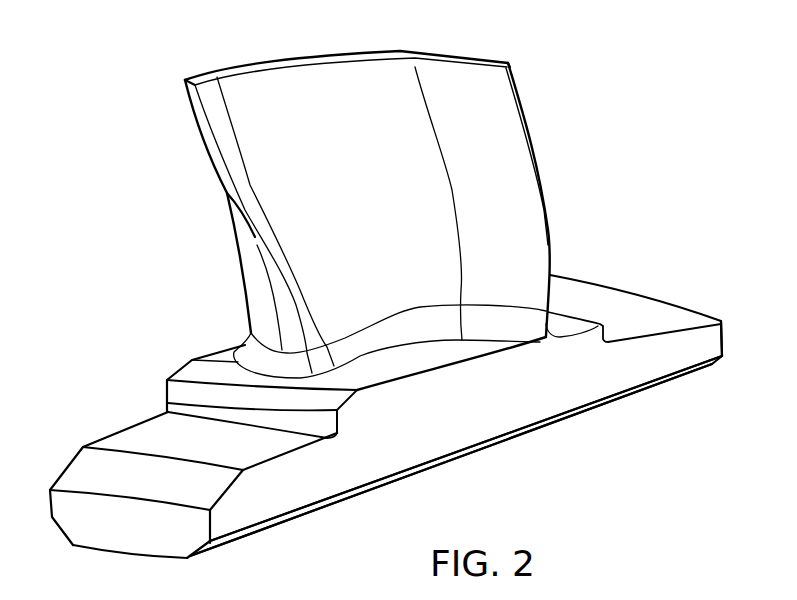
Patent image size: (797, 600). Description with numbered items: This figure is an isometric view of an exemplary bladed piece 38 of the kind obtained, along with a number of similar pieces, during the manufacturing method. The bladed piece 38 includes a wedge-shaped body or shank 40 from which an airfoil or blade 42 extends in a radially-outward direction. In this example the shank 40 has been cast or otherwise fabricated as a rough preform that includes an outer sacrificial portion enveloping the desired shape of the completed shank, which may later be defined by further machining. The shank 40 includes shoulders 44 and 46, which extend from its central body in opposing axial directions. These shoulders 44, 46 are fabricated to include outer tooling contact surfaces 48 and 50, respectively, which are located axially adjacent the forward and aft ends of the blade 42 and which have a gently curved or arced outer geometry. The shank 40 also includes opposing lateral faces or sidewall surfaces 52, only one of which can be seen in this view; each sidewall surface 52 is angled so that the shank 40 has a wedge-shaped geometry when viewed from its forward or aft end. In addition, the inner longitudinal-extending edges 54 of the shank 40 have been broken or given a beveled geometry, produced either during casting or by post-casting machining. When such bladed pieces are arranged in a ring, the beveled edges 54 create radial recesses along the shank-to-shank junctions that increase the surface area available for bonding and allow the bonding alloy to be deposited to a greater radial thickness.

The bladed piece 38 is at (128, 188).
The shank 40 is at (653, 412).
The blade 42 is at (488, 62).
The shoulder 44 is at (135, 430).
The shoulder 46 is at (637, 298).
The outer tooling contact surface 48 is at (73, 475).
The outer tooling contact surface 50 is at (710, 312).
The sidewall surface 52 is at (457, 430).
The beveled longitudinal edge 54 is at (435, 463).